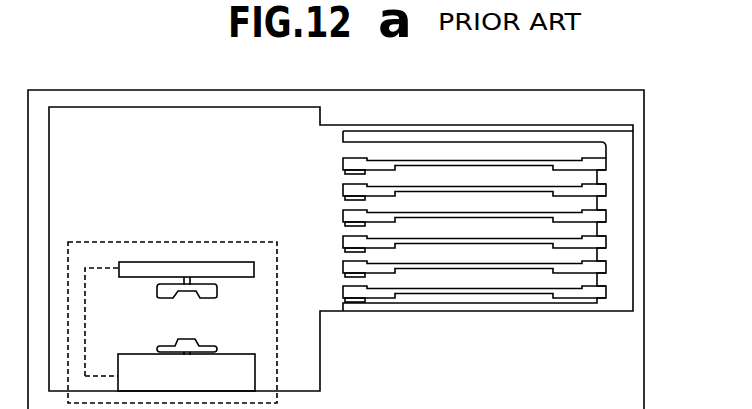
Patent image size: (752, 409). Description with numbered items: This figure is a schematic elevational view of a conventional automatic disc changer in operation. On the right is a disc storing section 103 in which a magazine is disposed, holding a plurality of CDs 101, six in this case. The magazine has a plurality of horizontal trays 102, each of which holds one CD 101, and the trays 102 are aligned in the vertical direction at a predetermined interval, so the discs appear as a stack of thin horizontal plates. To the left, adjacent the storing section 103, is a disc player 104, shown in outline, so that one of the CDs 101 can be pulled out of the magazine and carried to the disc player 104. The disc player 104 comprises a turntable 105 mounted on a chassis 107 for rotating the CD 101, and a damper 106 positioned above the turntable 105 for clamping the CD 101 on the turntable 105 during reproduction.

The CD 101 is at (482, 216).
The horizontal tray 102 is at (600, 165).
The disc storing section 103 is at (534, 115).
The disc player 104 is at (108, 242).
The turntable 105 is at (165, 343).
The damper 106 is at (203, 288).
The chassis 107 is at (243, 375).